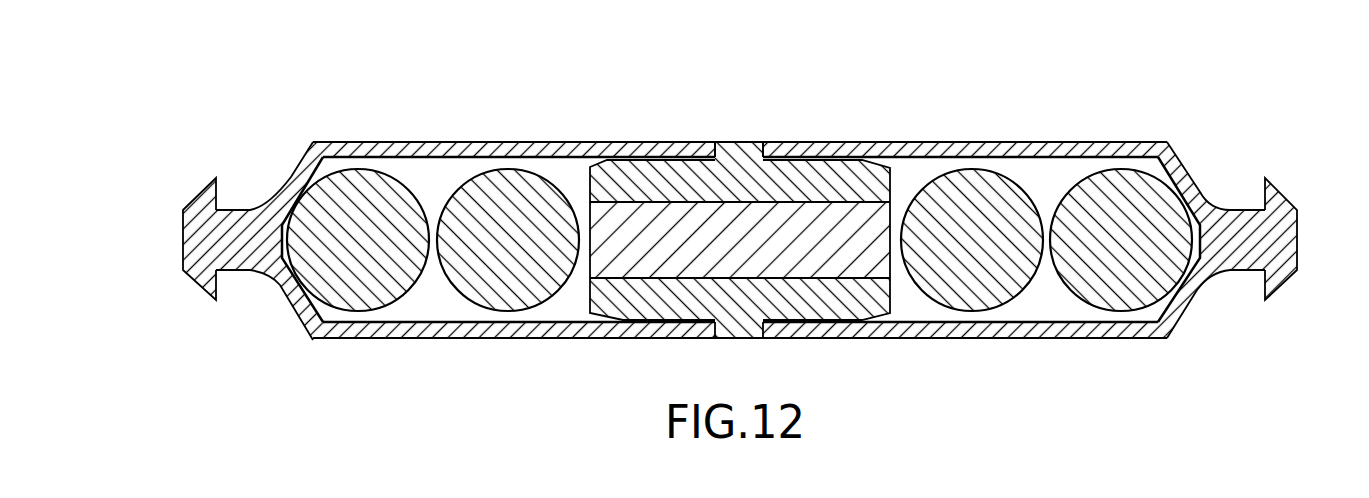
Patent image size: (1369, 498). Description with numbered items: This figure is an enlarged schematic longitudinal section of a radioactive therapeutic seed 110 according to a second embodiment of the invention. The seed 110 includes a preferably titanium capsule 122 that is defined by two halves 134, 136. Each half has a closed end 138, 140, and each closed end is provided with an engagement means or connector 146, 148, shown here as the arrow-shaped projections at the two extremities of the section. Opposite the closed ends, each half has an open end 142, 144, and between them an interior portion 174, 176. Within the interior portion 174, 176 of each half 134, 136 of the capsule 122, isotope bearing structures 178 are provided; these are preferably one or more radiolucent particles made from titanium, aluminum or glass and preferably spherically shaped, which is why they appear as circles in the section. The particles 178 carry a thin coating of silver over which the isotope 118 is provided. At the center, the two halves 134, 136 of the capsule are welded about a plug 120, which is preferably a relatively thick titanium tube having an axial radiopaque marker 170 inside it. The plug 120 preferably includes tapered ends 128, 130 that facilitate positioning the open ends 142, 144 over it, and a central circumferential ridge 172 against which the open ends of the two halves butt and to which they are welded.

The therapeutic seed 110 is at (740, 211).
The isotope 118 is at (463, 298).
The plug 120 is at (832, 178).
The capsule 122 is at (578, 141).
The tapered end 128 is at (590, 312).
The tapered end 130 is at (888, 312).
The half 134 is at (425, 140).
The half 136 is at (980, 147).
The closed end 138 is at (300, 168).
The closed end 140 is at (1183, 165).
The open end 142 is at (700, 340).
The open end 144 is at (787, 340).
The connector 146 is at (203, 225).
The connector 148 is at (1278, 228).
The radiopaque marker 170 is at (667, 237).
The central circumferential ridge 172 is at (743, 147).
The interior portion 174 is at (448, 175).
The interior portion 176 is at (1053, 178).
The isotope bearing structures 178 is at (347, 280).